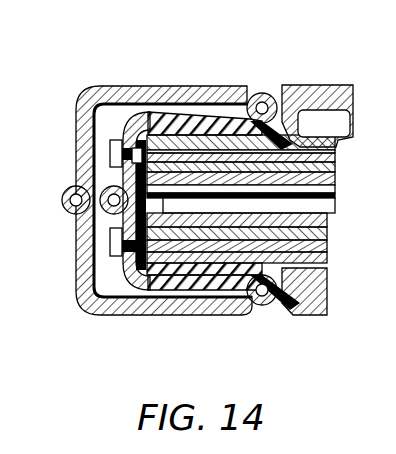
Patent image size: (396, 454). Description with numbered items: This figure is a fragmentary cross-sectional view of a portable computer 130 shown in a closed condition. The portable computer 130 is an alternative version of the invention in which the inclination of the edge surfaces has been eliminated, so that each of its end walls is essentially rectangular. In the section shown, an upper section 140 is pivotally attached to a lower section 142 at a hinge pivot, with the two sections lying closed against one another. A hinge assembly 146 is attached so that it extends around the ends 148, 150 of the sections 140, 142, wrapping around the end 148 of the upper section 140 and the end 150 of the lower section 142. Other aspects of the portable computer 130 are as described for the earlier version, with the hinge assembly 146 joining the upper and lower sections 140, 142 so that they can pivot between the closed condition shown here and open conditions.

The portable computer 130 is at (122, 326).
The upper section 140 is at (340, 86).
The lower section 142 is at (307, 318).
The hinge assembly 146 is at (113, 86).
The end of upper section 148 is at (110, 153).
The end of lower section 150 is at (110, 255).